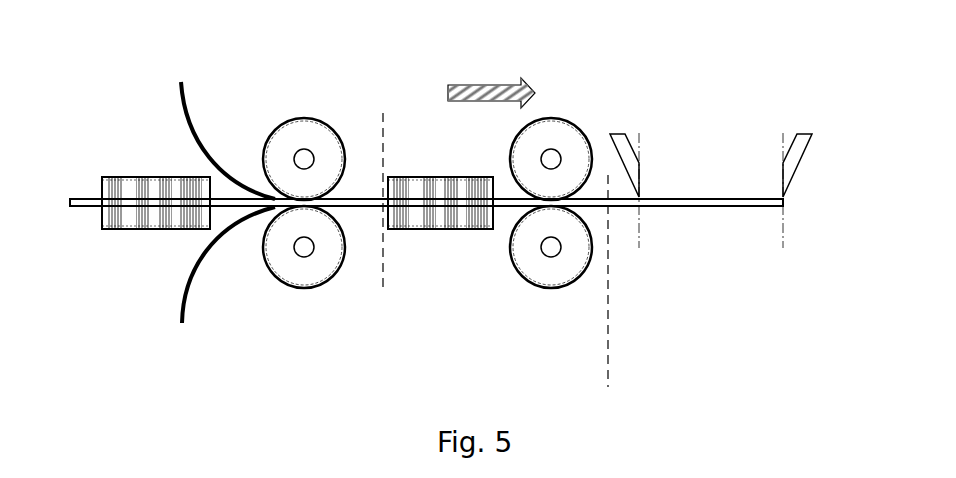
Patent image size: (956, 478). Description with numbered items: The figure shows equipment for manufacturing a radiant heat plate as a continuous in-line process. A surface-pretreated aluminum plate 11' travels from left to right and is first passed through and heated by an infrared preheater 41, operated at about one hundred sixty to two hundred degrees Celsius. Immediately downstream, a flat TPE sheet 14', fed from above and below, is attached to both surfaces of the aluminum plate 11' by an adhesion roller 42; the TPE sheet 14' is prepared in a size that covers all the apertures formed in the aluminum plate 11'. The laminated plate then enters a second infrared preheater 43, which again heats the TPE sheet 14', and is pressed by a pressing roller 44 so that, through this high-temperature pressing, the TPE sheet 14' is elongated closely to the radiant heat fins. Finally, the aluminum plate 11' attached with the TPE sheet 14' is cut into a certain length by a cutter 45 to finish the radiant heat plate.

The aluminum plate 11' is at (422, 160).
The TPE sheet 14' is at (228, 170).
The infrared preheater 41 is at (132, 229).
The adhesion roller 42 is at (290, 288).
The infrared preheater 43 is at (442, 229).
The pressing roller 44 is at (535, 288).
The cutter 45 is at (620, 134).